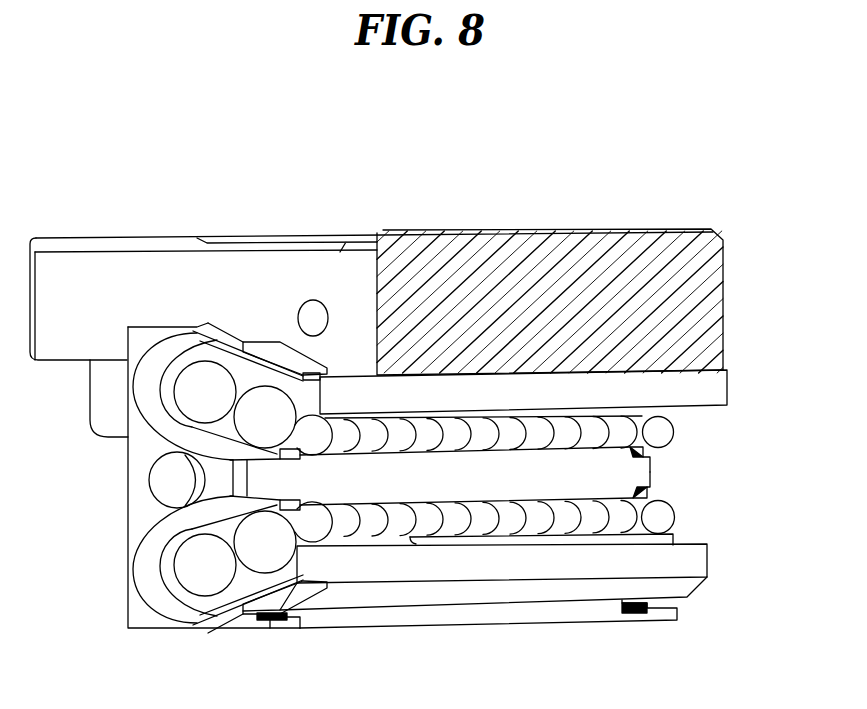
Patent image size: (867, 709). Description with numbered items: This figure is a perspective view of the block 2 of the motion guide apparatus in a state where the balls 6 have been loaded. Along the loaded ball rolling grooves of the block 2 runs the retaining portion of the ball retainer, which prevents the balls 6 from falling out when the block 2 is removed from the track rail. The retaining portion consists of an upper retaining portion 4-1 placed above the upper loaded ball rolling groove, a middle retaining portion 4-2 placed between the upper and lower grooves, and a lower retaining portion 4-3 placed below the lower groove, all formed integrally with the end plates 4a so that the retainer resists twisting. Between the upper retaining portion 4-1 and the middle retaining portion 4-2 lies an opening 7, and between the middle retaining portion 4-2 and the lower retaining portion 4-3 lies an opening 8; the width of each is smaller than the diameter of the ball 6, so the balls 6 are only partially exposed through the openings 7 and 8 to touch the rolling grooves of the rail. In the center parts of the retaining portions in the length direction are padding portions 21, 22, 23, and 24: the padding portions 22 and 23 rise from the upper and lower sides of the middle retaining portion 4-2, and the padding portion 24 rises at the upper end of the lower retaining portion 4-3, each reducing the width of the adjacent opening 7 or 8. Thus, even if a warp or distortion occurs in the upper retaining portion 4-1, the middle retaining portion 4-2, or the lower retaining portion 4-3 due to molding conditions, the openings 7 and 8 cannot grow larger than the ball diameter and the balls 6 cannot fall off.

The block 2 is at (605, 222).
The upper retaining portion 4-1 is at (695, 393).
The middle retaining portion 4-2 is at (512, 477).
The lower retaining portion 4-3 is at (473, 568).
The end plate 4a is at (167, 521).
The ball 6 is at (262, 410).
The opening 7 is at (490, 428).
The opening 8 is at (387, 536).
The padding portion 21 is at (553, 419).
The padding portion 22 is at (553, 453).
The padding portion 23 is at (517, 503).
The padding portion 24 is at (573, 527).